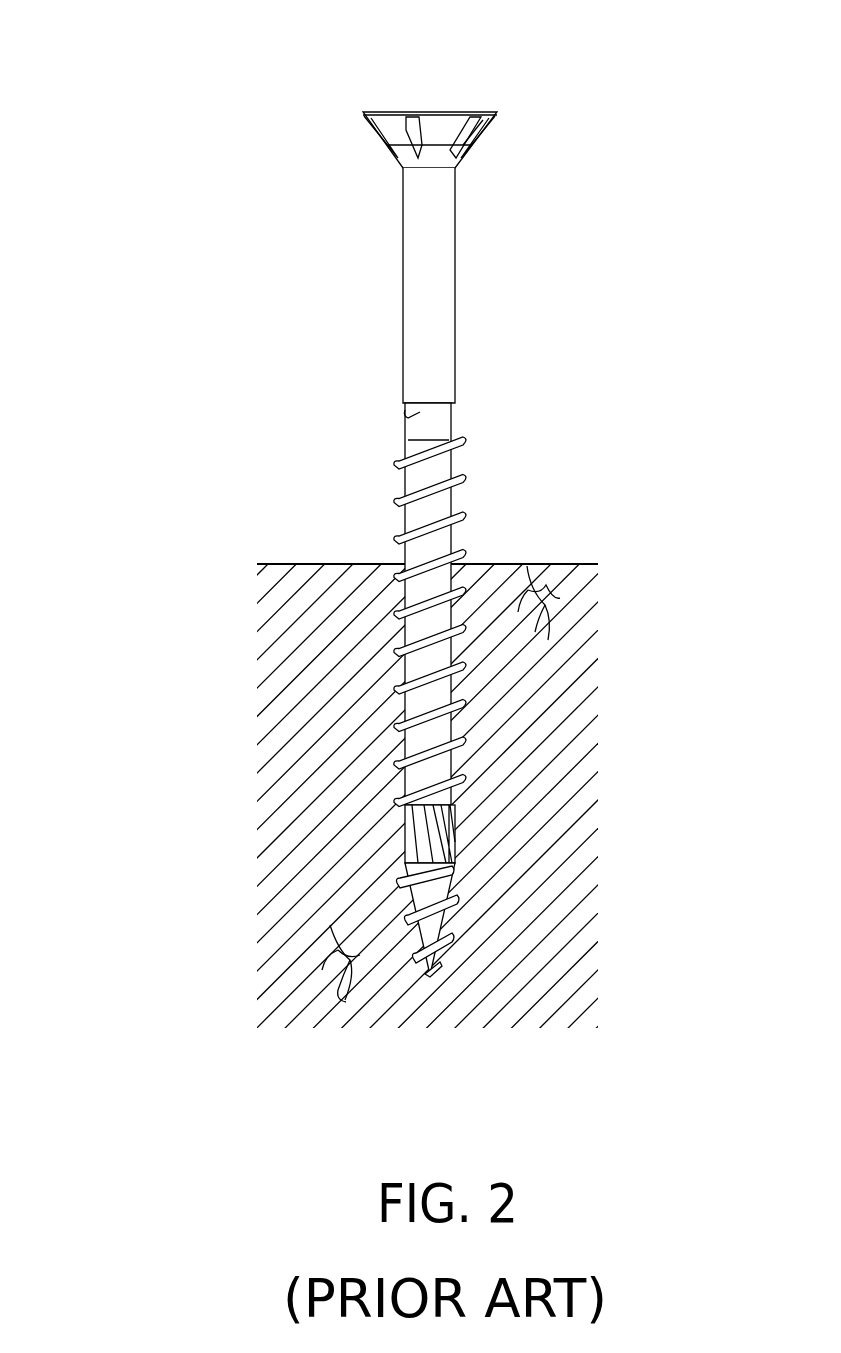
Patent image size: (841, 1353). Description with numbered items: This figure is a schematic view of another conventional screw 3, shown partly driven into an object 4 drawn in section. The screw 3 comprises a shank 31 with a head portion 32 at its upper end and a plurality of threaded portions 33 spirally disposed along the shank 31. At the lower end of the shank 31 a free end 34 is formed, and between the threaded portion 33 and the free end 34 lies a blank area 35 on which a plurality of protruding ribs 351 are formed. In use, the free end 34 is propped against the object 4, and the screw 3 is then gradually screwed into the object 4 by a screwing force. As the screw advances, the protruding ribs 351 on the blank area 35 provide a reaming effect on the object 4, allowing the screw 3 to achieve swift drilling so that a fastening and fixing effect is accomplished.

The conventional screw 3 is at (382, 488).
The object 4 is at (325, 564).
The shank 31 is at (445, 287).
The head portion 32 is at (460, 158).
The threaded portions 33 is at (455, 478).
The free end 34 is at (432, 975).
The blank area 35 is at (427, 795).
The protruding ribs 351 is at (408, 835).